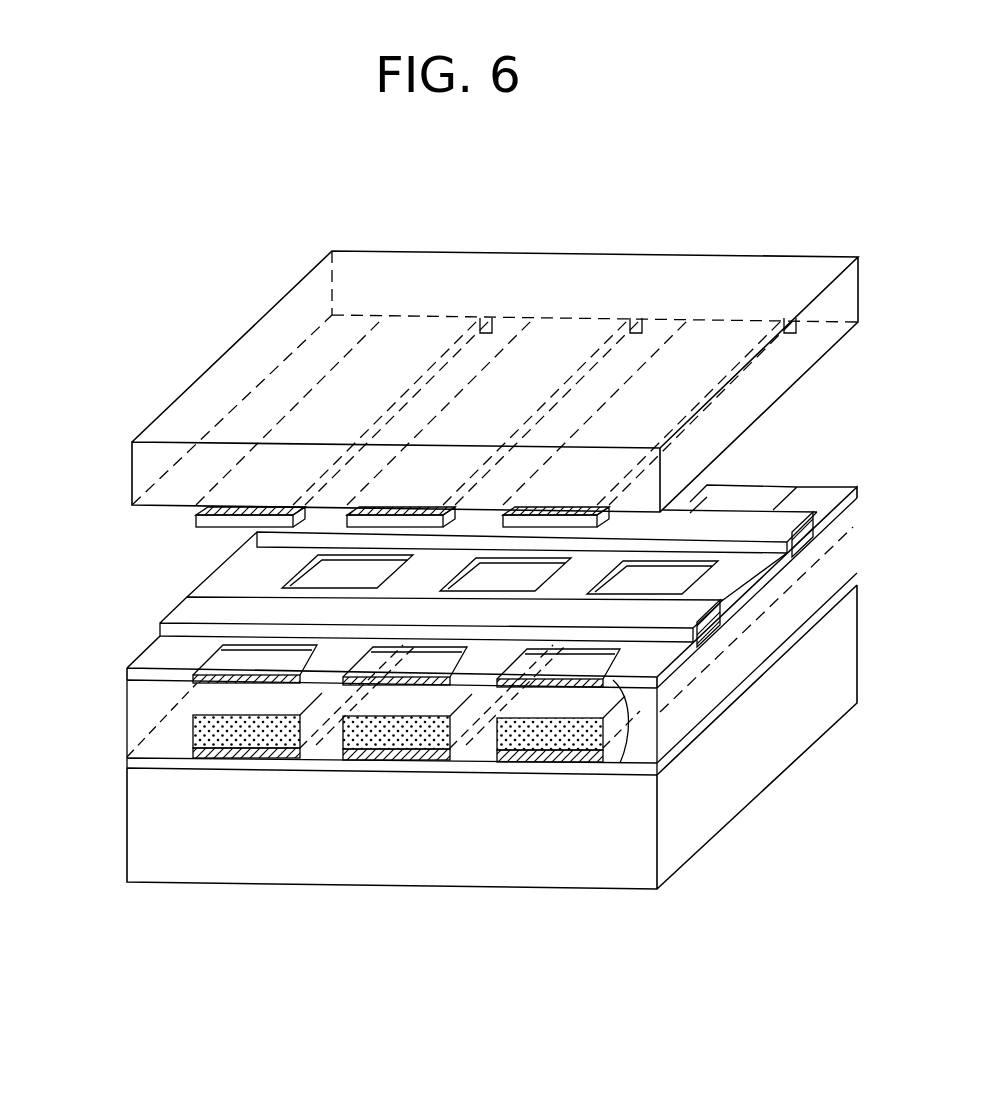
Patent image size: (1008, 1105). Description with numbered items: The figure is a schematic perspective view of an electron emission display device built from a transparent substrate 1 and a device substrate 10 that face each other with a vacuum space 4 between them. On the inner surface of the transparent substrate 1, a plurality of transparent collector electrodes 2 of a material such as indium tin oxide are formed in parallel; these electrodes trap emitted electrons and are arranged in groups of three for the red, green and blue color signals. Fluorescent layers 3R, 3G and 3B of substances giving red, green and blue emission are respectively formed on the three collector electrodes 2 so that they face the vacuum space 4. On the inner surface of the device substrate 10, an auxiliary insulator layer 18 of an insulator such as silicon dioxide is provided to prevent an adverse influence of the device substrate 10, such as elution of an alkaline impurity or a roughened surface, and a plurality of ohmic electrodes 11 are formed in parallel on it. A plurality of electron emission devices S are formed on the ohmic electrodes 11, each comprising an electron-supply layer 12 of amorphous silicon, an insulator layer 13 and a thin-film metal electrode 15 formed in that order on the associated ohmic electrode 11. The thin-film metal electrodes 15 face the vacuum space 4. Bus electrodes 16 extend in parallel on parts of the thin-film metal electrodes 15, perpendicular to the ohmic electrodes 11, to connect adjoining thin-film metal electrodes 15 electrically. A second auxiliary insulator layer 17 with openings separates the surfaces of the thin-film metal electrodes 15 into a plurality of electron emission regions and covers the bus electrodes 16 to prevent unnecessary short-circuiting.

The transparent substrate 1 is at (300, 297).
The transparent collector electrodes 2 is at (444, 369).
The fluorescent layer (red) 3R is at (247, 510).
The fluorescent layer (green) 3G is at (413, 520).
The fluorescent layer (blue) 3B is at (563, 527).
The vacuum space 4 is at (840, 447).
The device substrate 10 is at (132, 848).
The ohmic electrodes 11 is at (217, 753).
The electron-supply layer 12 is at (530, 742).
The insulator layer 13 is at (128, 702).
The thin-film metal electrode 15 is at (230, 665).
The bus electrodes 16 is at (708, 634).
The second auxiliary insulator layer 17 is at (130, 665).
The auxiliary insulator layer 18 is at (128, 763).
The electron emission device S is at (637, 725).